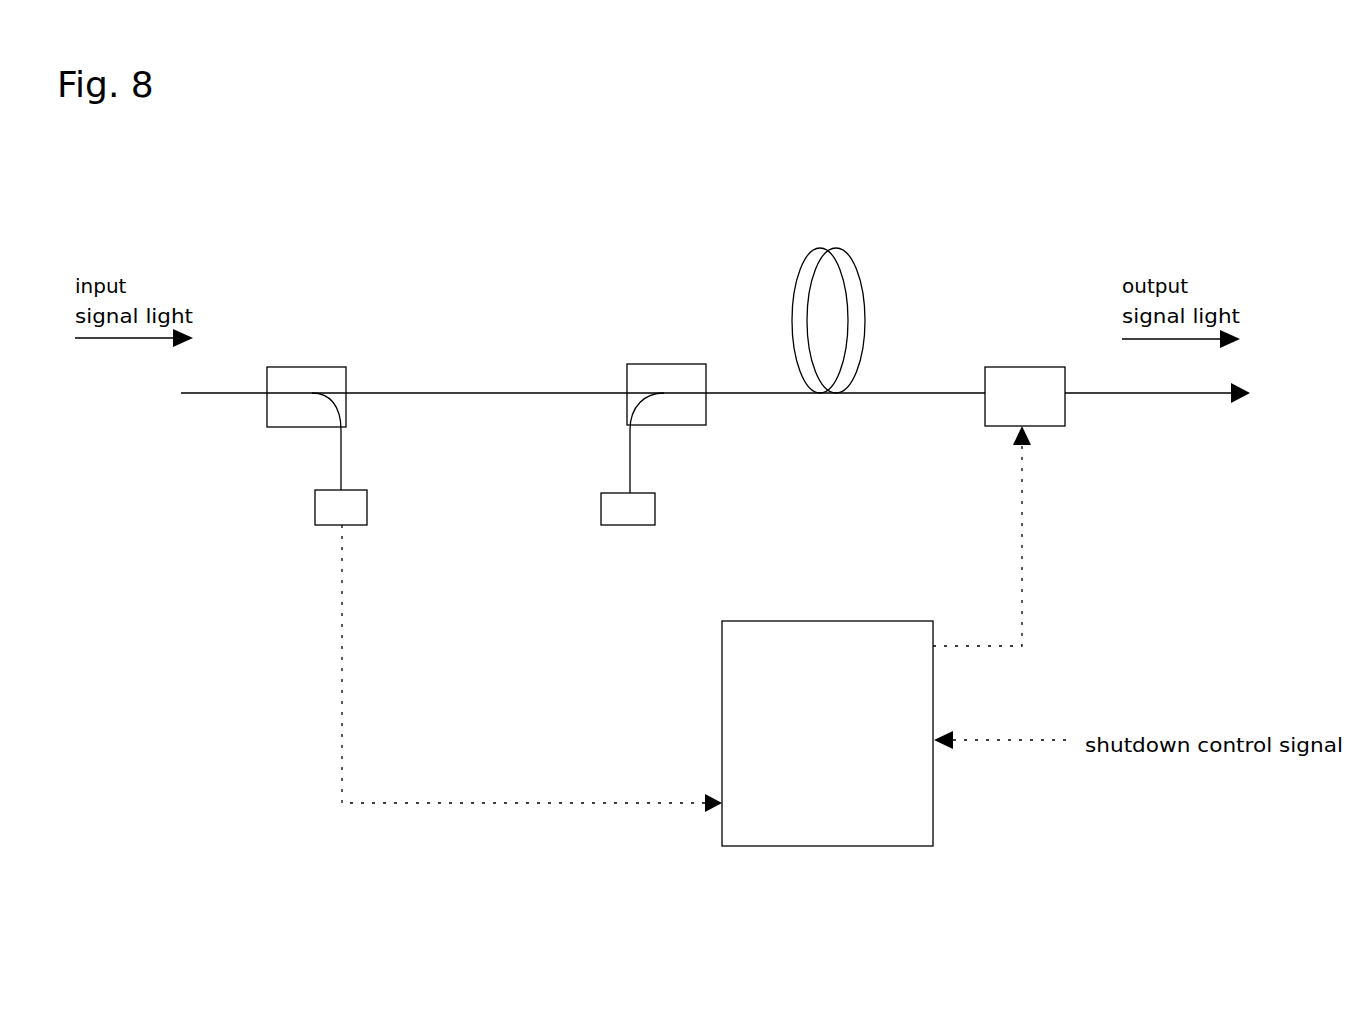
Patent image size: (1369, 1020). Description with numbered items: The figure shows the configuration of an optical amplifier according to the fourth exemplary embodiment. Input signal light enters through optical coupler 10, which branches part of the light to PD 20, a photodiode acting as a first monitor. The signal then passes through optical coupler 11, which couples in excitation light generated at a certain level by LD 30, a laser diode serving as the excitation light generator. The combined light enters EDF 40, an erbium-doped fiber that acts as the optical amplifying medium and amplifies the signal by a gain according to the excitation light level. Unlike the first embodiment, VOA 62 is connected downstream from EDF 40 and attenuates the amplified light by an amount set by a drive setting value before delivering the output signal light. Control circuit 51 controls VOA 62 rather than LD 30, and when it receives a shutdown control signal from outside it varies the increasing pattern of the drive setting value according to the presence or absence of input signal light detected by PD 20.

The optical coupler 10 is at (287, 367).
The optical coupler 11 is at (659, 352).
The PD (Photo Diode) 20 is at (315, 508).
The LD (Laser Diode) 30 is at (655, 510).
The EDF (Erbium-Doped Fiber) 40 is at (821, 250).
The control circuit 51 is at (885, 621).
The VOA 62 is at (995, 367).